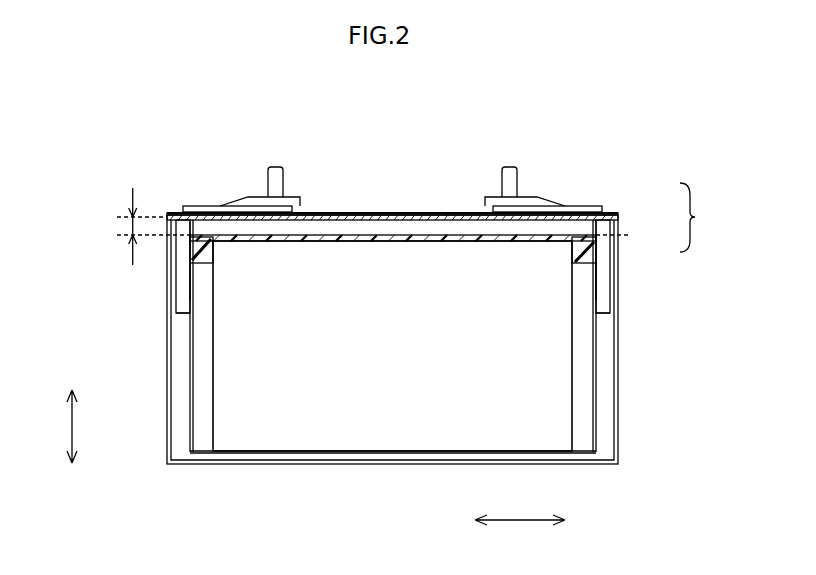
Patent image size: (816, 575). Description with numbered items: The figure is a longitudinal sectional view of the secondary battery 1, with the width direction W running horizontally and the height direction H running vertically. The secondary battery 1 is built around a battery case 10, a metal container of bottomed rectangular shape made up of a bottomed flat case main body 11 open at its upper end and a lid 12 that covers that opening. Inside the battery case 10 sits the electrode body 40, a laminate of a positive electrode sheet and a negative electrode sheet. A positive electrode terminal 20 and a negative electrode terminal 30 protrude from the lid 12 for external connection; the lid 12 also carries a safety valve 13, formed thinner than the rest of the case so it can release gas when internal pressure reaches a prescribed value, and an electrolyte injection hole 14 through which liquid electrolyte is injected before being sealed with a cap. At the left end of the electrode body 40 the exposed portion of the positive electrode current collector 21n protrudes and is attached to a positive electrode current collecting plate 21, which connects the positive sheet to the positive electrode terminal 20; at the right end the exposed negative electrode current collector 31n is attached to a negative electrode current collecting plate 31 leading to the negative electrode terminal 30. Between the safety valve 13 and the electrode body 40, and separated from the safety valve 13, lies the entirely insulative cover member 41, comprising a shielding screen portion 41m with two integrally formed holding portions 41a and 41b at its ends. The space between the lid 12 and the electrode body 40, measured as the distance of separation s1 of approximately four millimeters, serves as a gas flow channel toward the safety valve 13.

The secondary battery 1 is at (597, 131).
The battery case 10 is at (703, 217).
The case main body 11 is at (620, 248).
The lid 12 is at (619, 215).
The safety valve 13 is at (403, 213).
The electrolyte injection hole 14 is at (345, 213).
The positive electrode terminal 20 is at (270, 180).
The positive electrode current collecting plate 21 is at (176, 306).
The positive electrode current collector 21n is at (202, 440).
The negative electrode terminal 30 is at (500, 180).
The negative electrode current collecting plate 31 is at (610, 308).
The negative electrode current collector 31n is at (587, 443).
The electrode body 40 is at (445, 430).
The cover member 41 is at (190, 260).
The holding portion 41a is at (597, 262).
The holding portion 41b is at (190, 287).
The shielding screen portion 41m is at (358, 242).
The distance of separation s1 is at (132, 225).
The height direction H is at (59, 426).
The width direction W is at (520, 536).